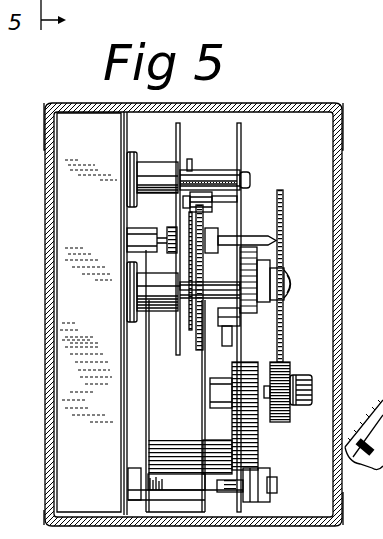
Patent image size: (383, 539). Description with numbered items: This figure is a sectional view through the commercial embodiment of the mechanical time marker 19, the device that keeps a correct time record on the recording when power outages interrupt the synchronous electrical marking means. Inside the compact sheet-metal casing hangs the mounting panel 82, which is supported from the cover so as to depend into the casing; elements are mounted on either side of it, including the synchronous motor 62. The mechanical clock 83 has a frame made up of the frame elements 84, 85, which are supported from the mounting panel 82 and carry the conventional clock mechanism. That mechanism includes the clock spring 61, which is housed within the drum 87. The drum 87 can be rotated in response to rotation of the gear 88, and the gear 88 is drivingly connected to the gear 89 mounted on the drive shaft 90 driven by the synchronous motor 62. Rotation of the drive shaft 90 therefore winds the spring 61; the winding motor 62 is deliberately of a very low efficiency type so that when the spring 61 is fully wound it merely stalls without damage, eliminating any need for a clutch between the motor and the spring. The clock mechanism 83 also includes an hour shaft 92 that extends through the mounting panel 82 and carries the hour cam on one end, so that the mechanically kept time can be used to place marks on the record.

The mechanical time marker 19 is at (343, 207).
The mounting panel 82 is at (122, 139).
The frame element 85 is at (181, 136).
The mechanical clock 83 is at (222, 152).
The frame element 84 is at (243, 142).
The gear 88 is at (284, 197).
The hour shaft 92 is at (163, 236).
The spring 61 is at (217, 263).
The drum 87 is at (227, 331).
The synchronous motor 62 is at (185, 388).
The drive shaft 90 is at (263, 406).
The gear 89 is at (282, 422).